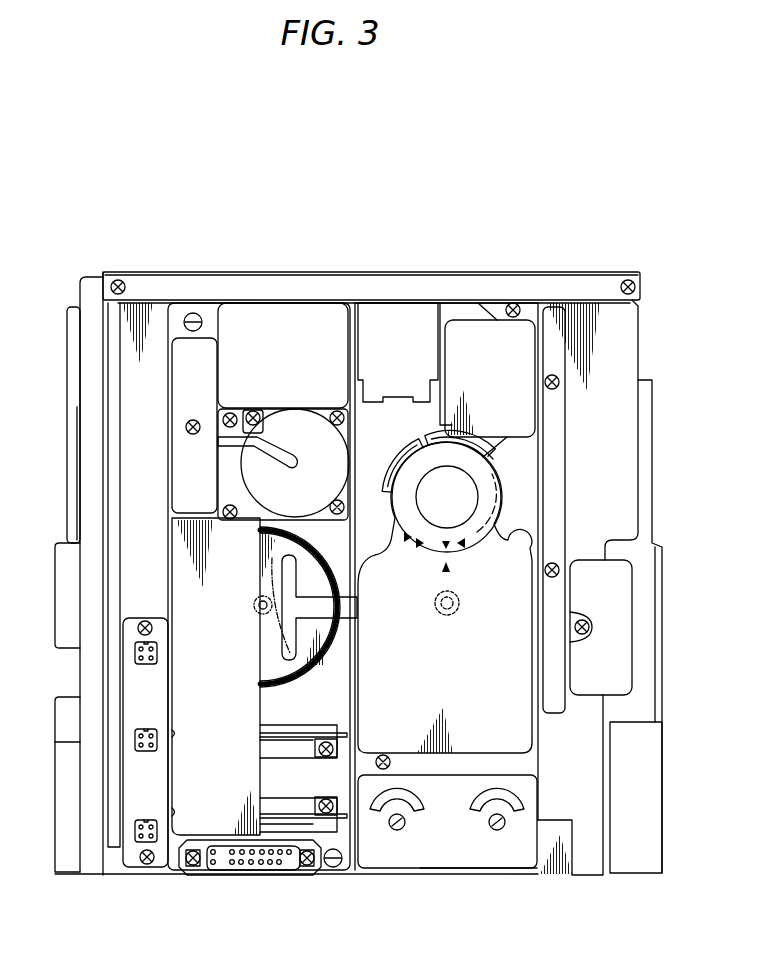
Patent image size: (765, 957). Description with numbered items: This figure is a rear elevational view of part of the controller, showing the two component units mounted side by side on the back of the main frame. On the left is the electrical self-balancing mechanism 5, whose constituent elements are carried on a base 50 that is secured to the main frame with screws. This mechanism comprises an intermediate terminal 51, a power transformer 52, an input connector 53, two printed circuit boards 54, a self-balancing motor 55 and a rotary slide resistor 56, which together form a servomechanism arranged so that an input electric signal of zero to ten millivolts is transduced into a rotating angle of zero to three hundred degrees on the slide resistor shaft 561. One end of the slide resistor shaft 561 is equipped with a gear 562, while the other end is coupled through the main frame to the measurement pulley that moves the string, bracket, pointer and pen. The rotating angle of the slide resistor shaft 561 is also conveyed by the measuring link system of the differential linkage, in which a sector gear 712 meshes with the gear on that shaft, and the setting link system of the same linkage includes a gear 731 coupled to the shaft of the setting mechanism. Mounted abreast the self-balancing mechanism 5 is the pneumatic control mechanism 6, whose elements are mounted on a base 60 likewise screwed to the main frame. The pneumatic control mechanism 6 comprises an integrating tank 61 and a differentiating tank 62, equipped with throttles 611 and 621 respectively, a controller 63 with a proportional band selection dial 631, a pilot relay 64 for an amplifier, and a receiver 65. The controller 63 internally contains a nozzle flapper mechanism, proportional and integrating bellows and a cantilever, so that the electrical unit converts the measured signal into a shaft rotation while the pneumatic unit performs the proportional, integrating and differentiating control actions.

The electrical self-balancing mechanism 5 is at (131, 266).
The pneumatic control mechanism 6 is at (584, 266).
The base 50 is at (172, 870).
The intermediate terminal 51 is at (185, 380).
The power transformer 52 is at (275, 305).
The input connector 53 is at (237, 875).
The printed circuit boards 54 is at (288, 733).
The self-balancing motor 55 is at (245, 470).
The rotary slide resistor 56 is at (306, 540).
The slide resistor shaft 561 is at (258, 607).
The gear 562 is at (272, 618).
The base 60 is at (541, 870).
The integrating tank 61 is at (498, 862).
The throttle 611 is at (490, 831).
The differentiating tank 62 is at (367, 864).
The throttle 621 is at (399, 832).
The controller 63 is at (515, 566).
The proportional band selection dial 631 is at (393, 465).
The pilot relay 64 is at (463, 328).
The receiver 65 is at (397, 318).
The sector gear 712 is at (336, 640).
The gear 731 is at (449, 617).